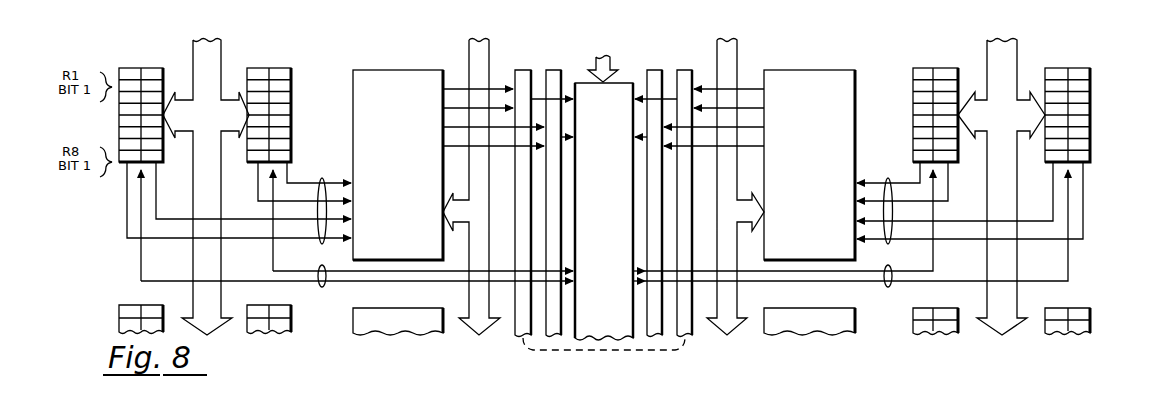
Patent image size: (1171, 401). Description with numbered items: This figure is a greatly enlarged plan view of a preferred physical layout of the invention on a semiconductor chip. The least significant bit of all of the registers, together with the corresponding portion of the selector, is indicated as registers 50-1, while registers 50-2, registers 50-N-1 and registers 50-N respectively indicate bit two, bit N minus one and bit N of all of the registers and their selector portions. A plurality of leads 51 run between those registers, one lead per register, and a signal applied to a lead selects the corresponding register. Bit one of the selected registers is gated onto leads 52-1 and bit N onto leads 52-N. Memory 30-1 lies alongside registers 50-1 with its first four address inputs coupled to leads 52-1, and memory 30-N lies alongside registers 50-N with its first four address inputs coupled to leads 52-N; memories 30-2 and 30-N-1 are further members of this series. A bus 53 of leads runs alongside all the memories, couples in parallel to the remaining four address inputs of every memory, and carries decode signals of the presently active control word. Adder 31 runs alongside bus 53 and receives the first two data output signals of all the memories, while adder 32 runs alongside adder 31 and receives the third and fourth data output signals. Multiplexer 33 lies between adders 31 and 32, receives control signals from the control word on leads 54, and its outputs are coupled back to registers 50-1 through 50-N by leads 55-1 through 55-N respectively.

The bit 1 register portion 50-1 is at (119, 68).
The leads 51 is at (191, 53).
The memory 30-1 is at (352, 69).
The bus 53 is at (469, 49).
The adder 31 is at (523, 68).
The adder 32 is at (550, 68).
The multiplexer 33 is at (614, 181).
The leads 54 is at (603, 60).
The leads 52-1 is at (324, 180).
The leads 52-N is at (886, 180).
The leads 55-1 is at (322, 287).
The leads 55-N is at (888, 287).
The memory 30-N is at (823, 70).
The bit N register portion 50-N is at (956, 68).
The bit 2 register portion 50-2 is at (125, 305).
The memory 30-2 is at (365, 311).
The memory 30-N-1 is at (843, 311).
The bit N-1 register portion 50-N-1 is at (912, 311).